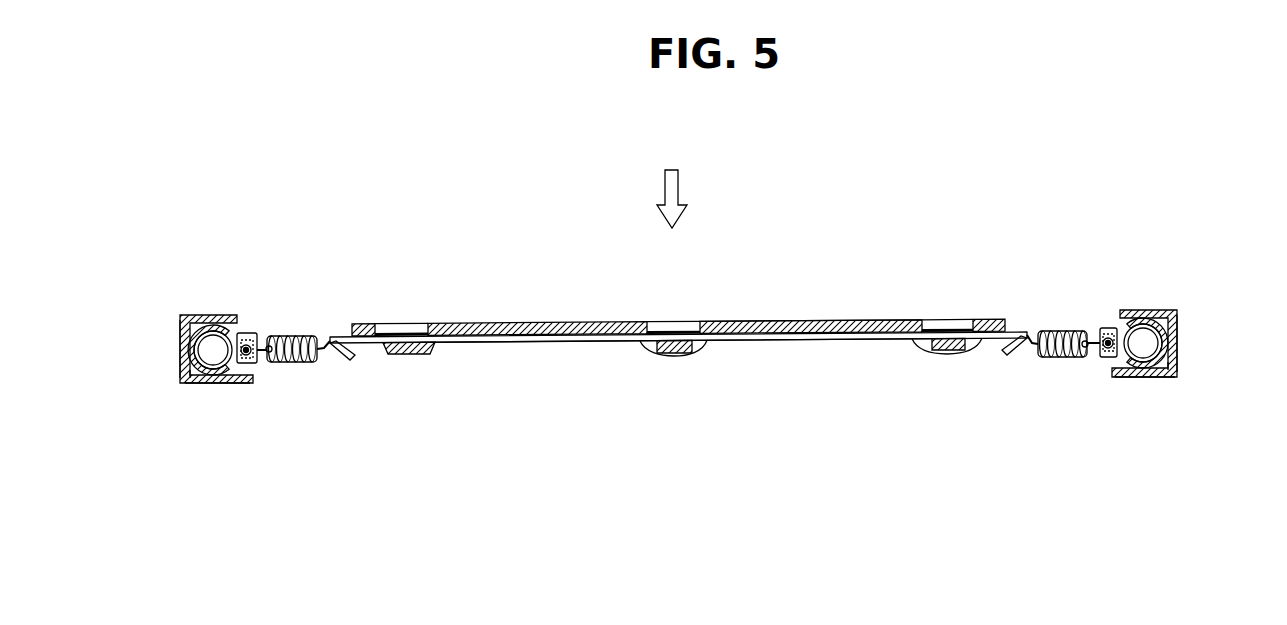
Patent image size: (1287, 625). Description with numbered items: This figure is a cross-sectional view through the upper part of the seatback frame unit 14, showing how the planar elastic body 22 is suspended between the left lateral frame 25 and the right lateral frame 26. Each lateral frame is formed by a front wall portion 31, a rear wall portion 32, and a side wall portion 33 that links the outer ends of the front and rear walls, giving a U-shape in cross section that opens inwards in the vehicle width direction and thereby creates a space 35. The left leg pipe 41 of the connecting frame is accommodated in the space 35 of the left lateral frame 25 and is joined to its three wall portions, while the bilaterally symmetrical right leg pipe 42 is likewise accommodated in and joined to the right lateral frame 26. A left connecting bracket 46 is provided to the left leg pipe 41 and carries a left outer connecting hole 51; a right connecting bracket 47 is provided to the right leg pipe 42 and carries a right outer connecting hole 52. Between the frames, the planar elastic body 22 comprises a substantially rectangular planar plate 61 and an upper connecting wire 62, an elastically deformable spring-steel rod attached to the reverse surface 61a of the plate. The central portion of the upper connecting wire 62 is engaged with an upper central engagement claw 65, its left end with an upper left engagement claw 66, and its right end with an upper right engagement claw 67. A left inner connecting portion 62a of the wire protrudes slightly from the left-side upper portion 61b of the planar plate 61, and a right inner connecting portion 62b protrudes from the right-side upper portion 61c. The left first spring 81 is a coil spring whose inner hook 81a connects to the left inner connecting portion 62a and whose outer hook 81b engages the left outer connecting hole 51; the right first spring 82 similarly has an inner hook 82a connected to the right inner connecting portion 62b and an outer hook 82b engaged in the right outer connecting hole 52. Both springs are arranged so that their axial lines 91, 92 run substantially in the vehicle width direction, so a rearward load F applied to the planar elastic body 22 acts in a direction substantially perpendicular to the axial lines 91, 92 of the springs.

The seatback frame unit 14 is at (890, 207).
The planar elastic body 22 is at (797, 318).
The left lateral frame 25 is at (175, 327).
The right lateral frame 26 is at (1183, 318).
The front wall portion 31 is at (215, 330).
The rear wall portion 32 is at (228, 385).
The side wall portion 33 is at (180, 352).
The space 35 is at (188, 376).
The left leg pipe 41 is at (200, 318).
The right leg pipe 42 is at (1170, 318).
The left connecting bracket 46 is at (248, 334).
The right connecting bracket 47 is at (1110, 330).
The left outer connecting hole 51 is at (248, 360).
The right outer connecting hole 52 is at (1105, 358).
The planar plate 61 is at (604, 318).
The reverse surface 61a is at (565, 343).
The left-side upper portion of the planar plate 61b is at (358, 325).
The right-side upper portion of the planar plate 61c is at (1010, 321).
The upper connecting wire 62 is at (762, 345).
The left inner connecting portion 62a is at (348, 360).
The right inner connecting portion 62b is at (1010, 356).
The upper central engagement claw 65 is at (672, 354).
The upper left engagement claw 66 is at (408, 357).
The upper right engagement claw 67 is at (942, 351).
The left first spring 81 is at (296, 345).
The inner hook of the left first spring 81a is at (335, 345).
The outer hook of the left first spring 81b is at (265, 345).
The right first spring 82 is at (1063, 333).
The inner hook of the right first spring 82a is at (1023, 340).
The outer hook of the right first spring 82b is at (1096, 340).
The axial line of the left first spring 91 is at (296, 362).
The axial line of the right first spring 92 is at (1048, 360).
The rearward load F is at (678, 182).